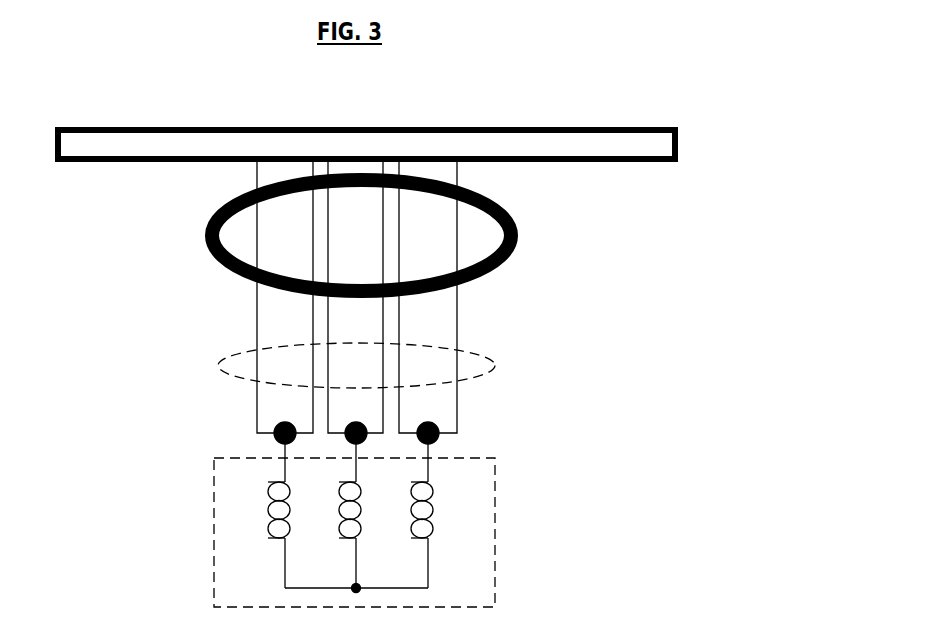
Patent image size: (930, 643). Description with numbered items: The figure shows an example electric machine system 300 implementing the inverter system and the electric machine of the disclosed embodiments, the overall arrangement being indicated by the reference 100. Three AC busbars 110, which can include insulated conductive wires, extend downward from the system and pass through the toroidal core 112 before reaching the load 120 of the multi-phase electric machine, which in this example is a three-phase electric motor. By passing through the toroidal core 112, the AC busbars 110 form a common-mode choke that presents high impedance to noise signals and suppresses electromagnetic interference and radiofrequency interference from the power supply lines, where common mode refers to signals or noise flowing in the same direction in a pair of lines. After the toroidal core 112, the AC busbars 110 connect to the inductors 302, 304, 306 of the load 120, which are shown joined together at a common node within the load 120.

The wireless power transfer system 100 is at (115, 225).
The AC busbars 110 is at (495, 367).
The toroidal core 112 is at (516, 215).
The load 120 is at (397, 513).
The electric machine system 300 is at (366, 101).
The inductor 302 is at (443, 510).
The inductor 304 is at (371, 510).
The inductor 306 is at (256, 510).